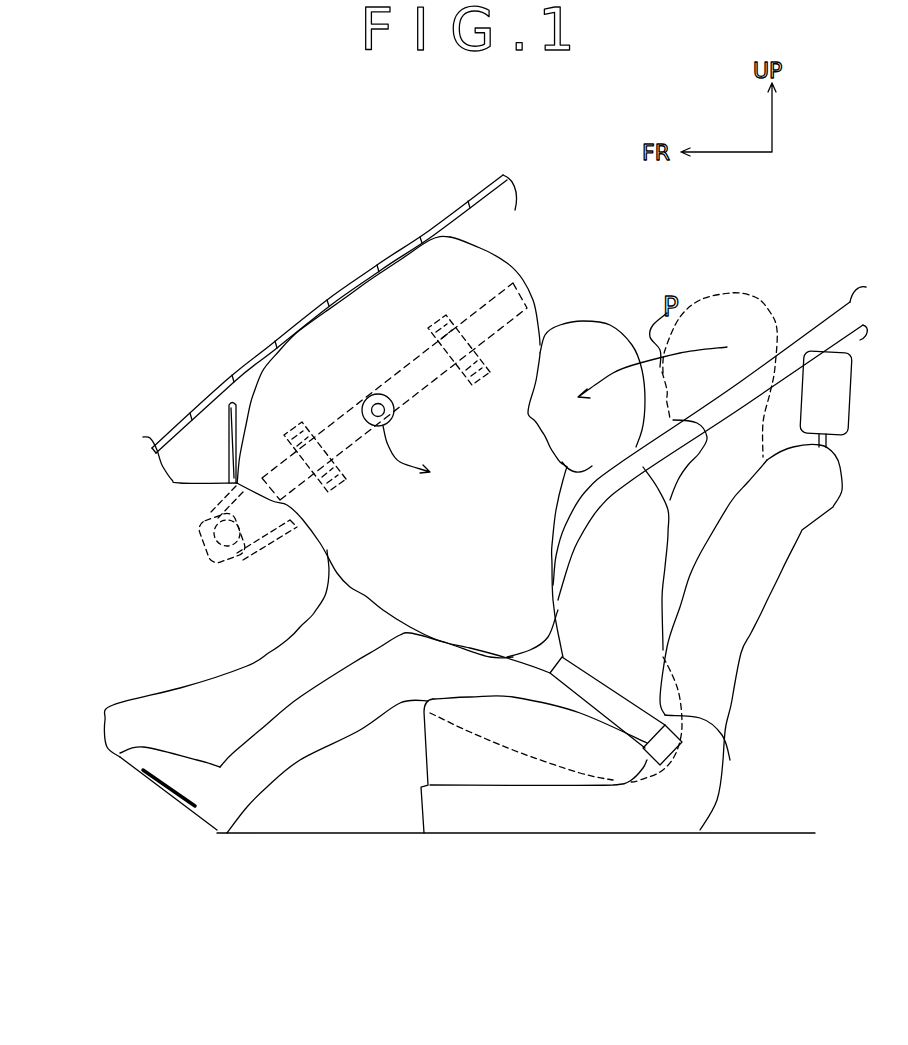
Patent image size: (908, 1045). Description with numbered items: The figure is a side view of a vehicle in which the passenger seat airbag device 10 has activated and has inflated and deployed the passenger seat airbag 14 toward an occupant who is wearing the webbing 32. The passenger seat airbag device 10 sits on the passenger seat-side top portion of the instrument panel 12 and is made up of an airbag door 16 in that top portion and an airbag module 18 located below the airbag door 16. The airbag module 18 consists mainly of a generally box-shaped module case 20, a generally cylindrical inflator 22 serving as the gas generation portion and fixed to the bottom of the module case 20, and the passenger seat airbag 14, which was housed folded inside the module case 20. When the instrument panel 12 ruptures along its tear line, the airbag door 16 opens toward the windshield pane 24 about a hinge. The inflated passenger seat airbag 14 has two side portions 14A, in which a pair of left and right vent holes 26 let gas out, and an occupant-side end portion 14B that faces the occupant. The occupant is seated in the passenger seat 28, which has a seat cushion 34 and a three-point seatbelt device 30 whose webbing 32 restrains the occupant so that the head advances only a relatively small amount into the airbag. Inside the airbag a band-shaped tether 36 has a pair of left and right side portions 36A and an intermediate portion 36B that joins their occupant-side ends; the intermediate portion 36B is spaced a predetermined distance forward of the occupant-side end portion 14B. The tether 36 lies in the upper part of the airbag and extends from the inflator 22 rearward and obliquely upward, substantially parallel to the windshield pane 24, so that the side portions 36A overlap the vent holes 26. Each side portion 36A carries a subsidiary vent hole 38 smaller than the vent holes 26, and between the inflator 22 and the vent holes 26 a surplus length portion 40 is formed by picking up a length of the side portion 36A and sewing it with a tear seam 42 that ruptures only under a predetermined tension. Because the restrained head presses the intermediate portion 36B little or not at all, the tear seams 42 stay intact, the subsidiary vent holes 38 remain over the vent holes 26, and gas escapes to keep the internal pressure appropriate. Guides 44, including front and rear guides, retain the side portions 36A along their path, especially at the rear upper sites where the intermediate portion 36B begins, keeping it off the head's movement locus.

The passenger seat airbag device 10 is at (578, 268).
The instrument panel 12 is at (158, 443).
The passenger seat airbag 14 is at (520, 277).
The side portions 14A is at (378, 588).
The occupant-side end portion 14B is at (533, 322).
The airbag door 16 is at (197, 482).
The airbag module 18 is at (214, 567).
The module case 20 is at (200, 538).
The inflator 22 is at (240, 565).
The windshield pane 24 is at (243, 365).
The vent holes 26 is at (368, 396).
The passenger seat 28 is at (745, 656).
The seatbelt device 30 is at (708, 489).
The webbing 32 is at (800, 330).
The seat cushion 34 is at (440, 757).
The tether 36 is at (440, 386).
The side portions 36A is at (388, 382).
The intermediate portion 36B is at (510, 323).
The subsidiary vent holes 38 is at (394, 402).
The surplus length portion 40 is at (385, 447).
The tear seam 42 is at (362, 470).
The guides 44 is at (317, 427).